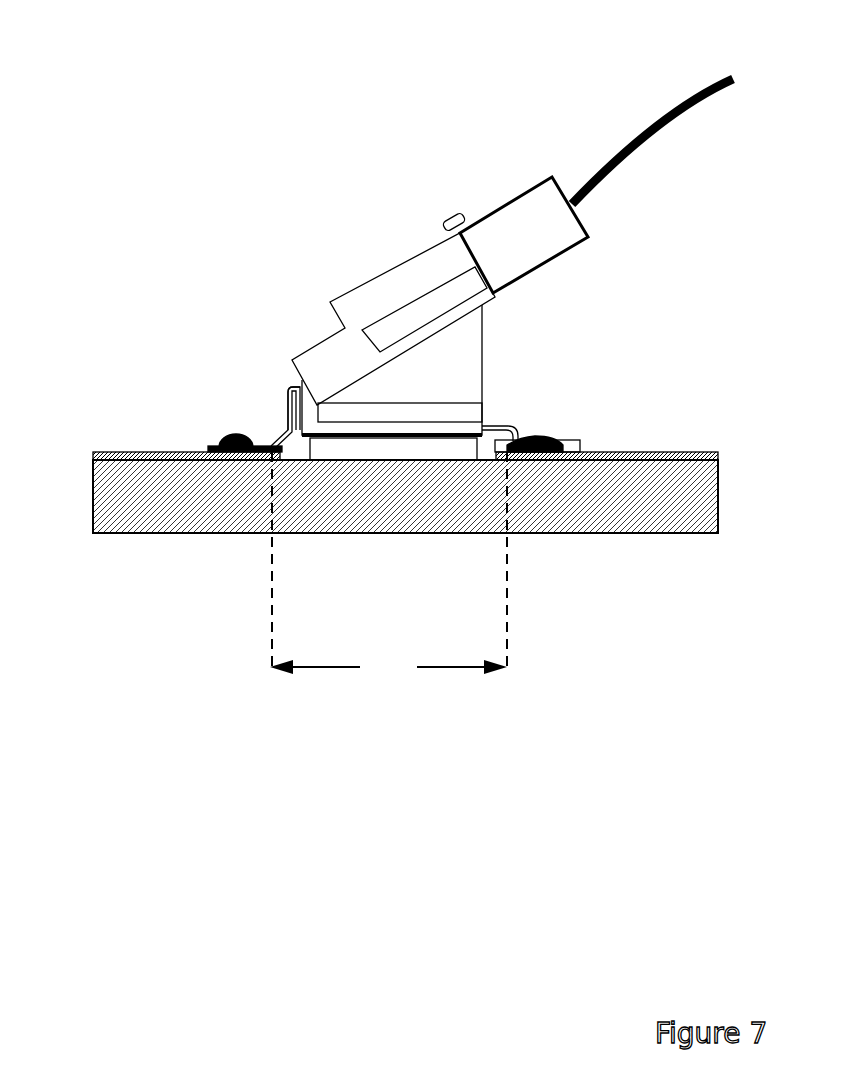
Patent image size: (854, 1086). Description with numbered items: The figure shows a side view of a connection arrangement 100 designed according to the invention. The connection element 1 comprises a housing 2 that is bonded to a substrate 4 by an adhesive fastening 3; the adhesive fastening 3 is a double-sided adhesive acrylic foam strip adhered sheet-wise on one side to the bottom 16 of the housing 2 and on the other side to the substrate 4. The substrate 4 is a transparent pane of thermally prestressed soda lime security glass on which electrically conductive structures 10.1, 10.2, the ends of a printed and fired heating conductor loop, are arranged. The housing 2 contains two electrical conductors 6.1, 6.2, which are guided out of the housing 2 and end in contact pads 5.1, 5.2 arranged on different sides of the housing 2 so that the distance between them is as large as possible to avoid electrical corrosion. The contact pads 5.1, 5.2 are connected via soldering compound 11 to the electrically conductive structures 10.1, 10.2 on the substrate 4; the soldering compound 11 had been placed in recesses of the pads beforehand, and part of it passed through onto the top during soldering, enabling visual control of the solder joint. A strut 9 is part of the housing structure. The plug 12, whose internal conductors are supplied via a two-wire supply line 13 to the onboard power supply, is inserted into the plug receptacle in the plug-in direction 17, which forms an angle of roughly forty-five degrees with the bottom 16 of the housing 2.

The connection arrangement 100 is at (170, 118).
The connection element 1 is at (392, 195).
The housing 2 is at (370, 277).
The adhesive fastening 3 is at (386, 441).
The substrate 4 is at (618, 513).
The contact pad 5.1 is at (217, 442).
The contact pad 5.2 is at (572, 438).
The electrical conductor 6.1 is at (279, 432).
The electrical conductor 6.2 is at (290, 383).
The strut 9 is at (460, 356).
The electrically conductive structure 10.1 is at (123, 452).
The electrically conductive structure 10.2 is at (668, 453).
The soldering compound 11 is at (235, 435).
The plug 12 is at (514, 212).
The supply line 13 is at (660, 120).
The bottom of the housing 16 is at (418, 460).
The plug-in direction 17 is at (640, 213).